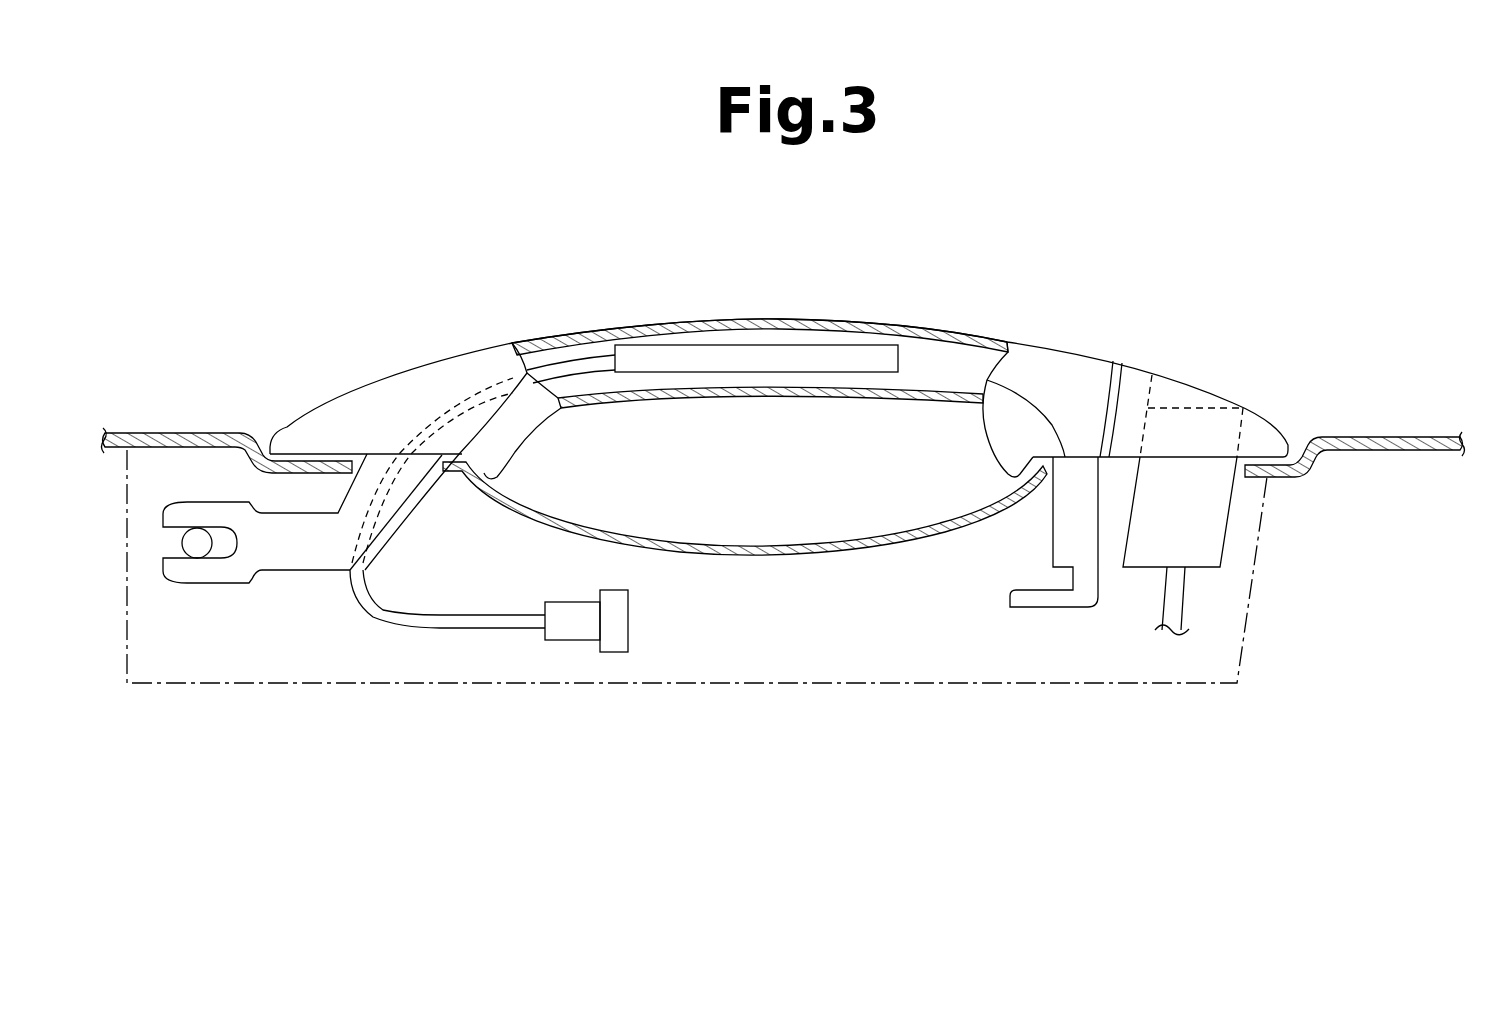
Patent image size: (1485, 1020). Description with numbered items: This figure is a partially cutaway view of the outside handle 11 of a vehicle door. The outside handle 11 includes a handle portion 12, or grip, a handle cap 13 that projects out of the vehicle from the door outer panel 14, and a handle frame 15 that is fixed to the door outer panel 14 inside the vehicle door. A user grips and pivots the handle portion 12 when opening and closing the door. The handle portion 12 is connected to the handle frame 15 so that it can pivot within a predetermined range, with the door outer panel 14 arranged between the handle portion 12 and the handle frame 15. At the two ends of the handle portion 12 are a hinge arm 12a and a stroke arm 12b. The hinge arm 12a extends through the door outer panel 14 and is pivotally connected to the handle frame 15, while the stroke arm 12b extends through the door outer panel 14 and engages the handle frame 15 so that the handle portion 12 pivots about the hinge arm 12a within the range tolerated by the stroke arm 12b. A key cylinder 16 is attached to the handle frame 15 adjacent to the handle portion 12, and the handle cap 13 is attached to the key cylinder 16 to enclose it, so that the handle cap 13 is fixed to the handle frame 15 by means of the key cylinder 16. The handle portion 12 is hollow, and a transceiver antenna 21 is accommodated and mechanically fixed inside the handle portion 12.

The outside handle 11 is at (1031, 310).
The handle portion 12 is at (430, 364).
The hinge arm 12a is at (208, 584).
The stroke arm 12b is at (1038, 609).
The handle cap 13 is at (1272, 414).
The door outer panel 14 is at (1393, 438).
The handle frame 15 is at (1253, 577).
The key cylinder 16 is at (1228, 515).
The transceiver antenna 21 is at (692, 343).